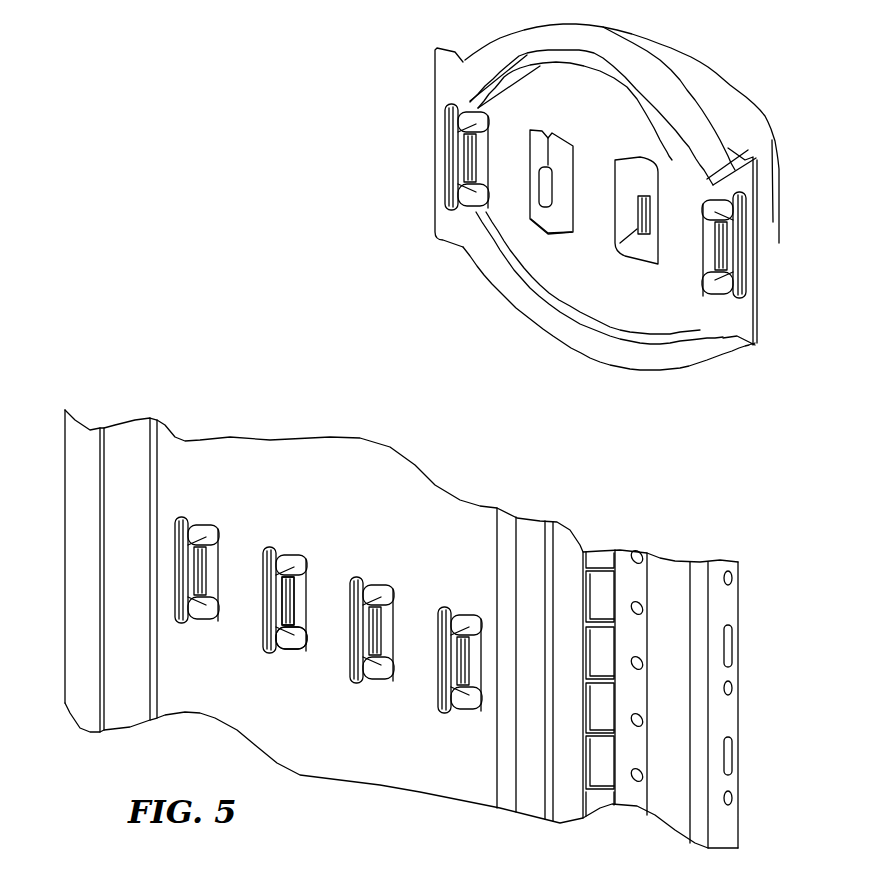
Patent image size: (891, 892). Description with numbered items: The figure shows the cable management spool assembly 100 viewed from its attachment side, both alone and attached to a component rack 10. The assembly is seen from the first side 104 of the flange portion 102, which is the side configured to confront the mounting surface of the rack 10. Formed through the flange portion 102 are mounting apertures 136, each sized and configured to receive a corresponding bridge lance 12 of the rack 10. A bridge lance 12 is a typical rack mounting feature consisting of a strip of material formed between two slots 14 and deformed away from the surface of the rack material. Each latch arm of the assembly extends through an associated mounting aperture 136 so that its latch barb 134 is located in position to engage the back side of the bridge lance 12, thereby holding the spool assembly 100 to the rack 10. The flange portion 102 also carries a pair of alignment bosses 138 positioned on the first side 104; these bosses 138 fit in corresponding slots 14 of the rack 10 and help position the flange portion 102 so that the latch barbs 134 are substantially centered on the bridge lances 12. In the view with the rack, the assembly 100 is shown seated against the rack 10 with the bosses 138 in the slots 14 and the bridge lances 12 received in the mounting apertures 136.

In FIG. 4, the cable management spool assembly 100 is at (748, 72).
In FIG. 4, the flange portion 102 is at (669, 369).
In FIG. 4, the first side 104 is at (455, 75).
In FIG. 4, the latch barb 134 is at (562, 216).
In FIG. 5, the latch barb 134 is at (298, 550).
In FIG. 4, the mounting aperture 136 is at (550, 232).
In FIG. 4, the alignment boss 138 is at (445, 170).
In FIG. 5, the alignment boss 138 is at (183, 513).
In FIG. 5, the component rack 10 is at (664, 550).
In FIG. 5, the bridge lance 12 is at (280, 642).
In FIG. 5, the slot 14 is at (273, 545).